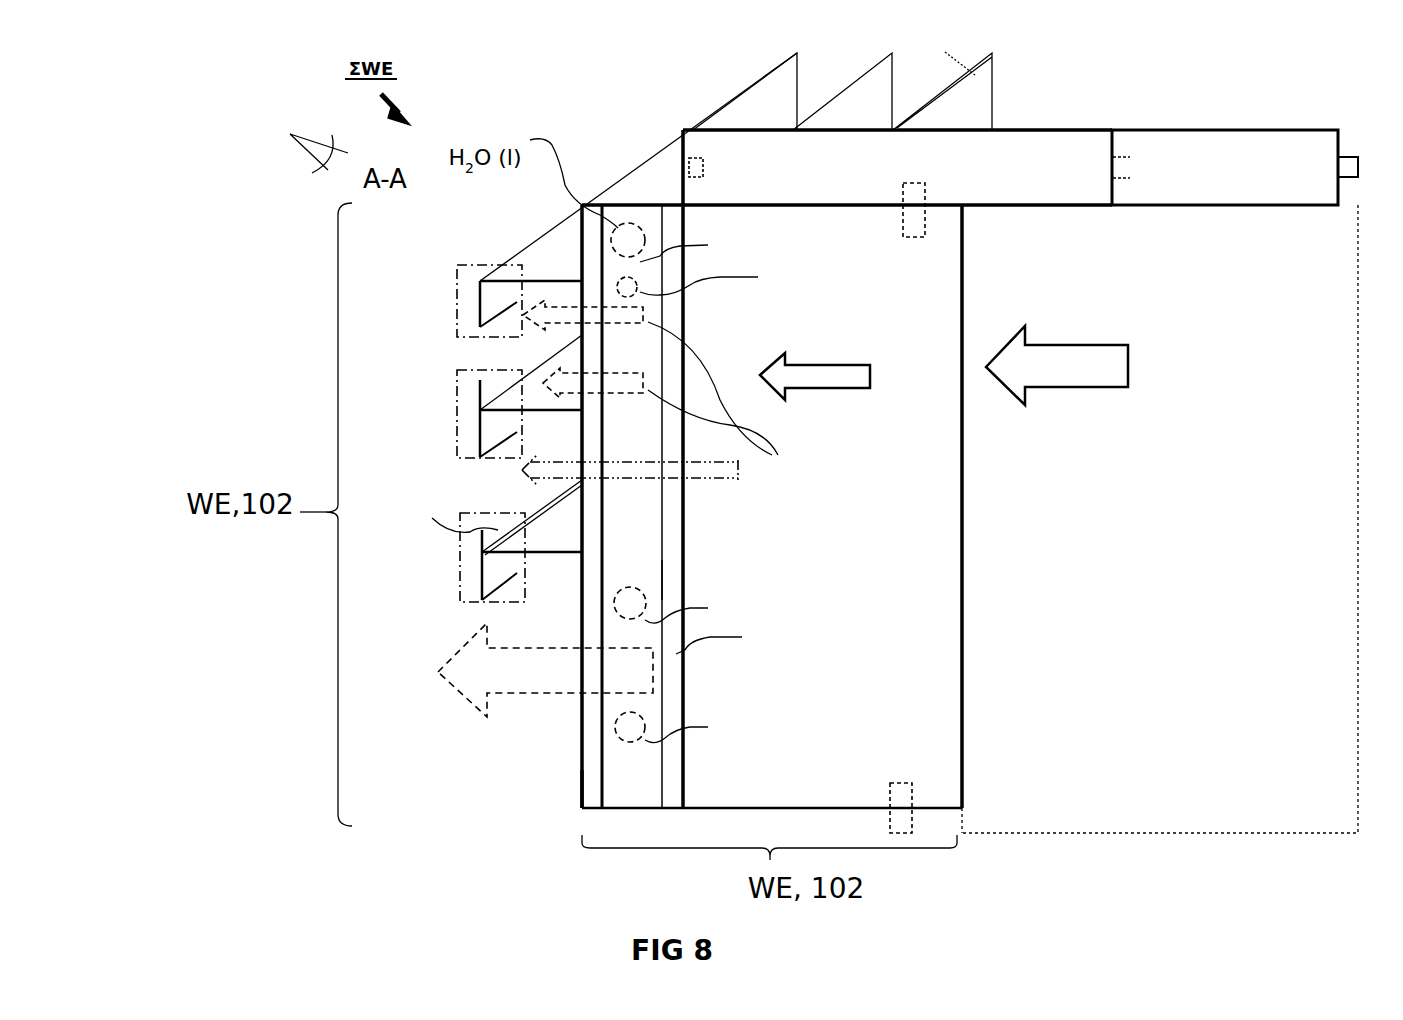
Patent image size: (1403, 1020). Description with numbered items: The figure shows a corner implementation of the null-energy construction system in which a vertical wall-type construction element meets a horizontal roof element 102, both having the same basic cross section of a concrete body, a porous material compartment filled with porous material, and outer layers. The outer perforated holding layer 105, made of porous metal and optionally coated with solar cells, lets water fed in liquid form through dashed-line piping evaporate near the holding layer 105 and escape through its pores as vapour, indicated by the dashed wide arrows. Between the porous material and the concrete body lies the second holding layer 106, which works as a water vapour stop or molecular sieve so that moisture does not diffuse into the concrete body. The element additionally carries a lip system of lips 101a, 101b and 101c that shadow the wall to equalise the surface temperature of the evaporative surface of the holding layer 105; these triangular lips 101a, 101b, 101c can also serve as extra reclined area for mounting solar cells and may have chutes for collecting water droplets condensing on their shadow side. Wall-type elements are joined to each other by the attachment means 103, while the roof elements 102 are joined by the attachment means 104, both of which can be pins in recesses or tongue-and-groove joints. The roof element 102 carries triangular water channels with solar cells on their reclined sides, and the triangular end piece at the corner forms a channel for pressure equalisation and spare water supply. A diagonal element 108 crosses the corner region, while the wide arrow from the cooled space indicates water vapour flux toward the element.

The lip 101a is at (457, 337).
The lip 101b is at (457, 458).
The lip 101c is at (462, 602).
The roof element 102 is at (911, 437).
The attachment means 103 is at (928, 218).
The attachment means 104 is at (692, 158).
The holding layer 105 is at (588, 787).
The second holding layer 106 is at (673, 582).
The screen 108 is at (623, 180).